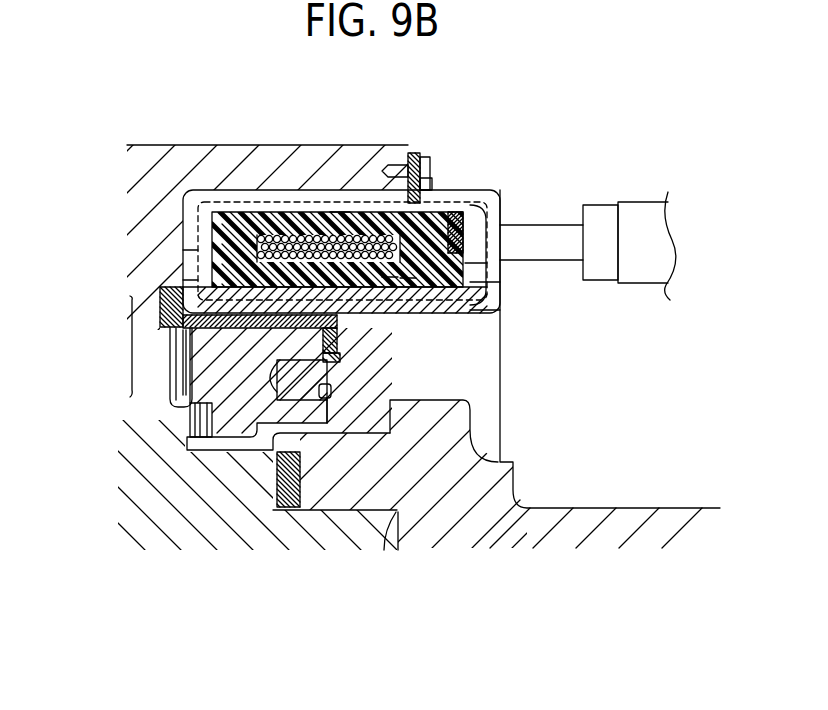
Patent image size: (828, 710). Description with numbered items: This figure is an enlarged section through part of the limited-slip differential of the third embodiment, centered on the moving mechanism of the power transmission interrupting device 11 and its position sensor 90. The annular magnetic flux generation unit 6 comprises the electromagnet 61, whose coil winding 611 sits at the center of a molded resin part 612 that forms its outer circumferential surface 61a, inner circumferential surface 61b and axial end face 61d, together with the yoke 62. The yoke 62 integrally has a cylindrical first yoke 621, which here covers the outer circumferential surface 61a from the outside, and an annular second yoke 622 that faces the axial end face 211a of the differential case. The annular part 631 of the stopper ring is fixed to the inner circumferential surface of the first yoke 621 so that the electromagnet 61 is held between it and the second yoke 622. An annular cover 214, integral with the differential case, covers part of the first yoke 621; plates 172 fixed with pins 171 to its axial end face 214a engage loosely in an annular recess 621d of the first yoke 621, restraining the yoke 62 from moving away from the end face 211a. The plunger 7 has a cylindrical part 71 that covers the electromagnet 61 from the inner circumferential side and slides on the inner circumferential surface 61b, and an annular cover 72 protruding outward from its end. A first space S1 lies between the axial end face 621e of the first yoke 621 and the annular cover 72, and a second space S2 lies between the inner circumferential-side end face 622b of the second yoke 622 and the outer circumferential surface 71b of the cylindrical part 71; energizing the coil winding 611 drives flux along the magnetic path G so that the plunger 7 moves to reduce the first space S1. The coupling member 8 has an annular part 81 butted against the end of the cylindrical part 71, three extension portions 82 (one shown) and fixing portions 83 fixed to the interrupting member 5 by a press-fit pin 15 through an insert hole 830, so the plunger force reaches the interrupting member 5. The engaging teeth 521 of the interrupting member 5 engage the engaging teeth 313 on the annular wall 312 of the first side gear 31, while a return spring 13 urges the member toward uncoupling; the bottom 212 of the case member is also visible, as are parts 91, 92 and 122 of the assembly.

The annular cover 214 is at (215, 168).
The axial end face of the cover 214a is at (412, 152).
The plate 172 is at (425, 160).
The pin 171 is at (432, 182).
The annular recess 621d is at (407, 180).
The yoke 62 is at (183, 213).
The axial end face of the electromagnet 61d is at (198, 232).
The second yoke 622 is at (195, 190).
The first yoke 621 is at (222, 200).
The axial end face of the cylindrical part 211a is at (187, 250).
The second space S2 is at (175, 280).
The electromagnet 61 is at (292, 98).
The coil winding 611 is at (270, 215).
The molded resin part 612 is at (290, 215).
The outer circumferential surface of the electromagnet 61a is at (342, 200).
The axial end face of the first yoke 621e is at (490, 202).
The annular part of the stopper ring 631 is at (502, 213).
The magnetic flux generation unit 6 is at (480, 152).
The first space S1 is at (482, 179).
The magnetic path G is at (492, 263).
The plunger 7 is at (548, 295).
The annular cover 72 is at (493, 282).
The cylindrical part 71 is at (493, 310).
The outer circumferential surface of the cylindrical part 71b is at (408, 278).
The inner circumferential surface of the electromagnet 61b is at (390, 277).
The lead wire 91 is at (567, 223).
The connector 92 is at (647, 202).
The position sensor 90 is at (659, 292).
The bottom 212 is at (483, 474).
The power transmission interrupting device 11 is at (346, 418).
The coupling member 8 is at (229, 346).
The annular part 81 is at (190, 322).
The extension portion 82 is at (337, 329).
The fixing portion 83 is at (342, 350).
The inner circumferential-side end face of the second yoke 622b is at (163, 313).
The annular wall 312 is at (178, 383).
The engaging teeth 313 is at (170, 353).
The engaging teeth 521 is at (180, 393).
The return spring 13 is at (192, 418).
The first side gear 31 is at (152, 467).
The interrupting member 5 is at (240, 402).
The press-fit pin 15 is at (345, 379).
The insert hole 830 is at (319, 402).
The rotor flange 122 is at (288, 508).